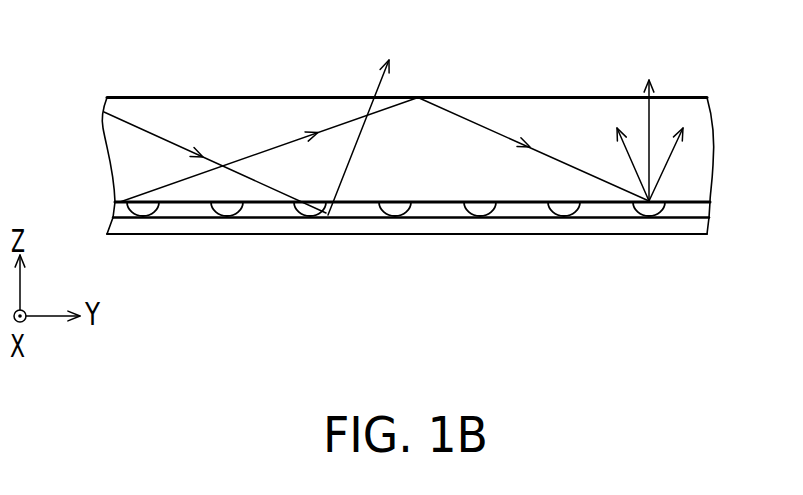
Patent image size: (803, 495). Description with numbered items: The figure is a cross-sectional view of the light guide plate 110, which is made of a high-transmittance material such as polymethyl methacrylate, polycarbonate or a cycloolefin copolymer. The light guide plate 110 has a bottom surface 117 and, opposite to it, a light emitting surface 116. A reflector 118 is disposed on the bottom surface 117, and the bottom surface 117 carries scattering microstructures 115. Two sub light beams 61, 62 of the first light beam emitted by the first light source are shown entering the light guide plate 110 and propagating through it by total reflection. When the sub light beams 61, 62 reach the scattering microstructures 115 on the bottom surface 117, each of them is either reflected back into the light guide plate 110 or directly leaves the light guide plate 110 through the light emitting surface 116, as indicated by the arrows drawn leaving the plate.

The light guide plate 110 is at (409, 166).
The light emitting surface 116 is at (220, 97).
The bottom surface 117 is at (188, 204).
The scattering microstructures 115 is at (648, 210).
The reflector 118 is at (255, 228).
The sub light beam 61 is at (147, 130).
The sub light beam 62 is at (340, 124).